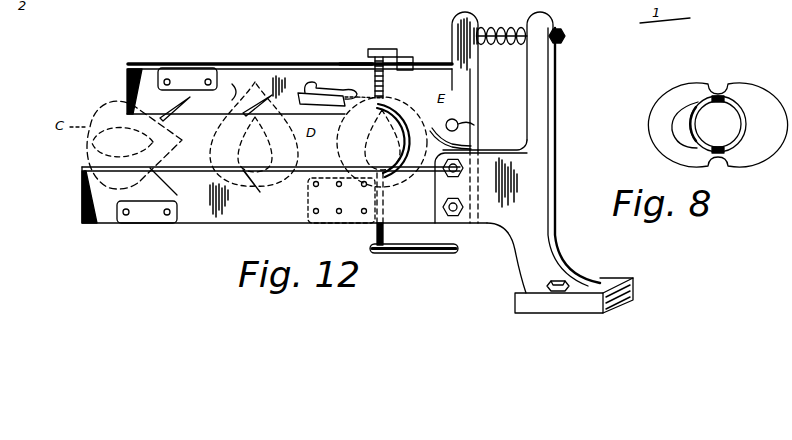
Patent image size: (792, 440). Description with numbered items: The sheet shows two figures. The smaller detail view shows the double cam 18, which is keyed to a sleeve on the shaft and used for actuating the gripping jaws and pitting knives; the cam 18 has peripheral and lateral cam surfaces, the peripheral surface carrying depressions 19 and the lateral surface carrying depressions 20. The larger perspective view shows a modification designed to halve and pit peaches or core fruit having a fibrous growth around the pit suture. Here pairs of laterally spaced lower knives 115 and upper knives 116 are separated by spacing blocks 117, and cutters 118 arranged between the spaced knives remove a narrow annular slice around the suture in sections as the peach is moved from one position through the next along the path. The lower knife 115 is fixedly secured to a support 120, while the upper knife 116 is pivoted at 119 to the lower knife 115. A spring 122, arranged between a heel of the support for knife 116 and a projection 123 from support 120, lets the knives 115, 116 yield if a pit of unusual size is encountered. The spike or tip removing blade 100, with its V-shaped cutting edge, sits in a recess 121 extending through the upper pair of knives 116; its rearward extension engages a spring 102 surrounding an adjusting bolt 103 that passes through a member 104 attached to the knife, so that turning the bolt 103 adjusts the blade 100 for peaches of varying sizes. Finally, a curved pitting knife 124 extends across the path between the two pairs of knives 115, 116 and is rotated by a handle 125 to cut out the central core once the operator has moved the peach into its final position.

In FIG. 8, the double cam 18 is at (690, 148).
In FIG. 8, the depressions 19 is at (718, 87).
In FIG. 8, the depressions 20 is at (710, 100).
In FIG. 12, the trimming blade 100 is at (289, 79).
In FIG. 12, the spring 102 is at (413, 63).
In FIG. 12, the bolt 103 is at (385, 50).
In FIG. 12, the member 104 is at (450, 60).
In FIG. 12, the lower knives 115 is at (117, 203).
In FIG. 12, the upper knives 116 is at (232, 84).
In FIG. 12, the spacing blocks 117 is at (202, 64).
In FIG. 12, the cutters 118 is at (246, 232).
In FIG. 12, the pivot 119 is at (458, 124).
In FIG. 12, the support 120 is at (538, 195).
In FIG. 12, the recess 121 is at (320, 93).
In FIG. 12, the spring 122 is at (504, 28).
In FIG. 12, the projection 123 is at (533, 85).
In FIG. 12, the curved pitting knife 124 is at (390, 108).
In FIG. 12, the handle 125 is at (428, 253).